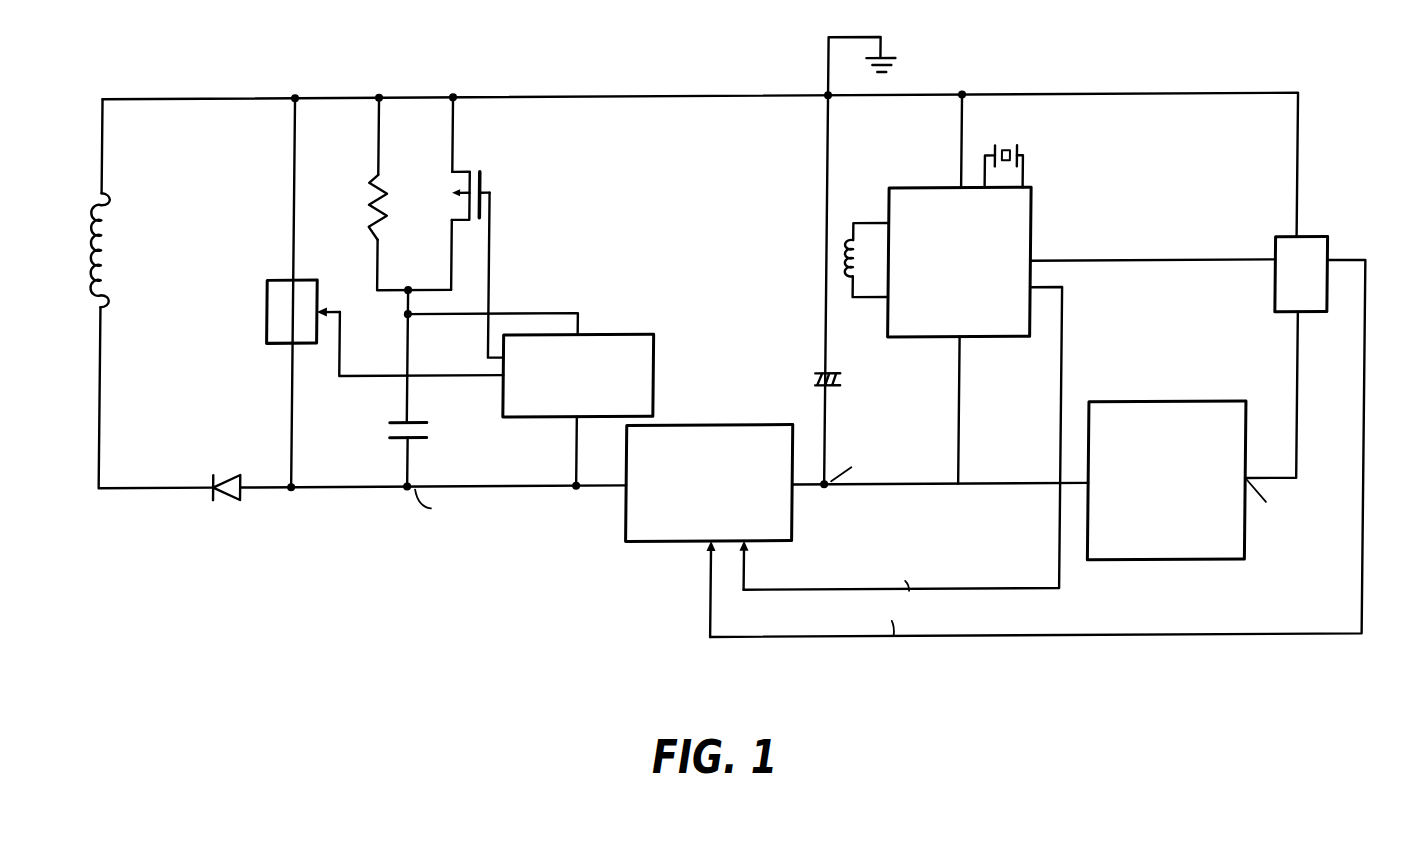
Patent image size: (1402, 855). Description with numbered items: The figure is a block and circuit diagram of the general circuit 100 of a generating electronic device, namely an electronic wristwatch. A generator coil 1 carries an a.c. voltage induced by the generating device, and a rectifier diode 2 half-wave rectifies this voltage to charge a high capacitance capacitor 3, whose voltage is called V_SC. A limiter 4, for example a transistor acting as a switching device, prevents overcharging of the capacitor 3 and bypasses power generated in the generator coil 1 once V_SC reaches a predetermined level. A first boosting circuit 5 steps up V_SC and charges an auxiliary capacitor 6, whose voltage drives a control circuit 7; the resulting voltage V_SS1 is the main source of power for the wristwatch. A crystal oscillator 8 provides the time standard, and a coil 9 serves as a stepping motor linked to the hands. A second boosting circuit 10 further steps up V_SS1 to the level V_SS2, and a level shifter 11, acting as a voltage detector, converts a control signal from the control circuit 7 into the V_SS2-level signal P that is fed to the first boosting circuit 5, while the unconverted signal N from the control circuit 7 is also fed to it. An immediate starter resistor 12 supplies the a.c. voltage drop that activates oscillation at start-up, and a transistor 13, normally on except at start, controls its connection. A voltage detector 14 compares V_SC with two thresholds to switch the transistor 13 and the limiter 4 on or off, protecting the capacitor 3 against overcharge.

The generator coil 1 is at (113, 252).
The rectifier diode 2 is at (220, 473).
The high capacitance capacitor 3 is at (430, 433).
The limiter 4 is at (266, 289).
The first boosting circuit 5 is at (752, 435).
The auxiliary capacitor 6 is at (834, 384).
The control circuit 7 is at (1031, 198).
The crystal oscillator 8 is at (1008, 147).
The coil 9 is at (848, 243).
The second boosting circuit 10 is at (1105, 405).
The level shifter 11 is at (1278, 242).
The immediate starter resistor 12 is at (372, 216).
The transistor 13 is at (486, 182).
The voltage detector 14 is at (645, 334).
The general circuit 100 is at (1208, 72).